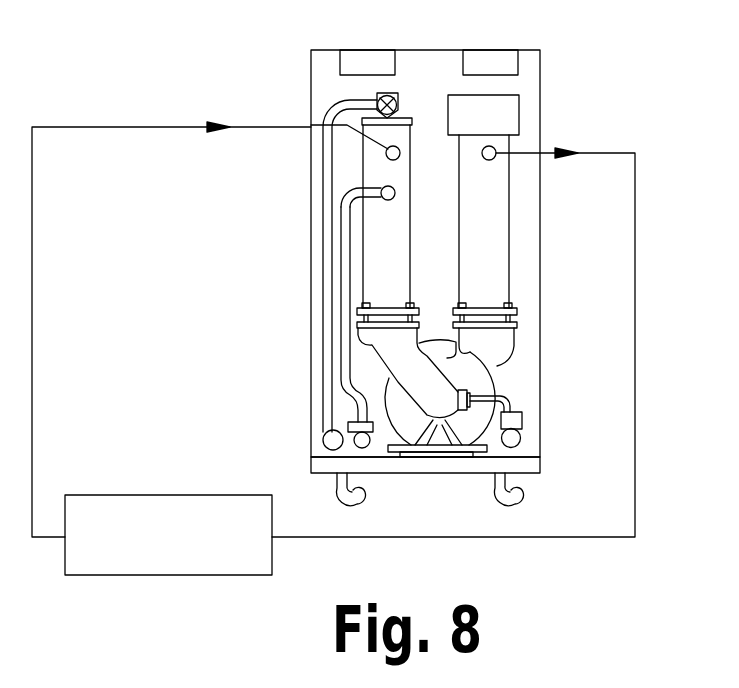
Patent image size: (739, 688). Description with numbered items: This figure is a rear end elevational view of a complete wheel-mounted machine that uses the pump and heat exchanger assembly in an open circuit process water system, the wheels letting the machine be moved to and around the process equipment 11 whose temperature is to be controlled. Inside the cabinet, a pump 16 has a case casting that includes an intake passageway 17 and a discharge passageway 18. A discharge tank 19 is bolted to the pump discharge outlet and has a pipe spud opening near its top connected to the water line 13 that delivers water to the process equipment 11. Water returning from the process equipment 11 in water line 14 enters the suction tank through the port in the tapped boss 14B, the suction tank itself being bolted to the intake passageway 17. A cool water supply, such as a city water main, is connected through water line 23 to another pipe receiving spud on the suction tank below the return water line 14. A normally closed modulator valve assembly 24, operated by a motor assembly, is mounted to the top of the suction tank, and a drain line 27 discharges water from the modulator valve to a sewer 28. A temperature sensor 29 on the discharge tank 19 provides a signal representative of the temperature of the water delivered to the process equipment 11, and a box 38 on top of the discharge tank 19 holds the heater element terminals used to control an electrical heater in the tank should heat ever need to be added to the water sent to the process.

The process equipment 11 is at (148, 494).
The water line 13 is at (636, 406).
The water line 14 is at (170, 130).
The tapped boss 14B is at (400, 147).
The pump 16 is at (487, 383).
The intake passageway 17 is at (377, 343).
The discharge passageway 18 is at (482, 341).
The discharge tank 19 is at (500, 211).
The water line 23 is at (352, 187).
The modulator valve assembly 24 is at (377, 93).
The drain line 27 is at (320, 196).
The sewer 28 is at (321, 432).
The temperature sensor 29 is at (500, 148).
The box 38 is at (512, 107).